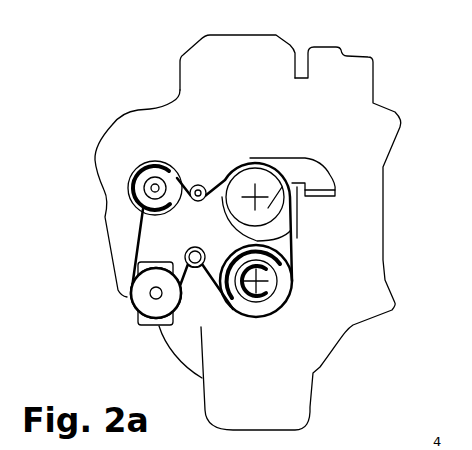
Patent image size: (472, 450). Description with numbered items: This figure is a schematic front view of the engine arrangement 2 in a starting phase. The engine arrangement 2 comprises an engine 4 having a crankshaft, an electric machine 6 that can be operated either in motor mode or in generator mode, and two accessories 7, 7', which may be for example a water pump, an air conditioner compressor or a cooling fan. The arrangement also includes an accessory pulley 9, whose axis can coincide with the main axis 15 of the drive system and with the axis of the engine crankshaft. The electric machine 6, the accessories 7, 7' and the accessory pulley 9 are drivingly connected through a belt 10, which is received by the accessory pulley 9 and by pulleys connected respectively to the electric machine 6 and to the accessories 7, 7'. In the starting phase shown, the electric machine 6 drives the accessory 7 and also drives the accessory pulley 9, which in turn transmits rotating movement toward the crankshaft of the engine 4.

The engine arrangement 2 is at (393, 97).
The engine 4 is at (217, 88).
The electric machine 6 is at (130, 190).
The accessory 7 is at (325, 197).
The accessory 7' is at (144, 317).
The accessory pulley 9 is at (283, 295).
The belt 10 is at (293, 237).
The main axis 15 is at (256, 284).